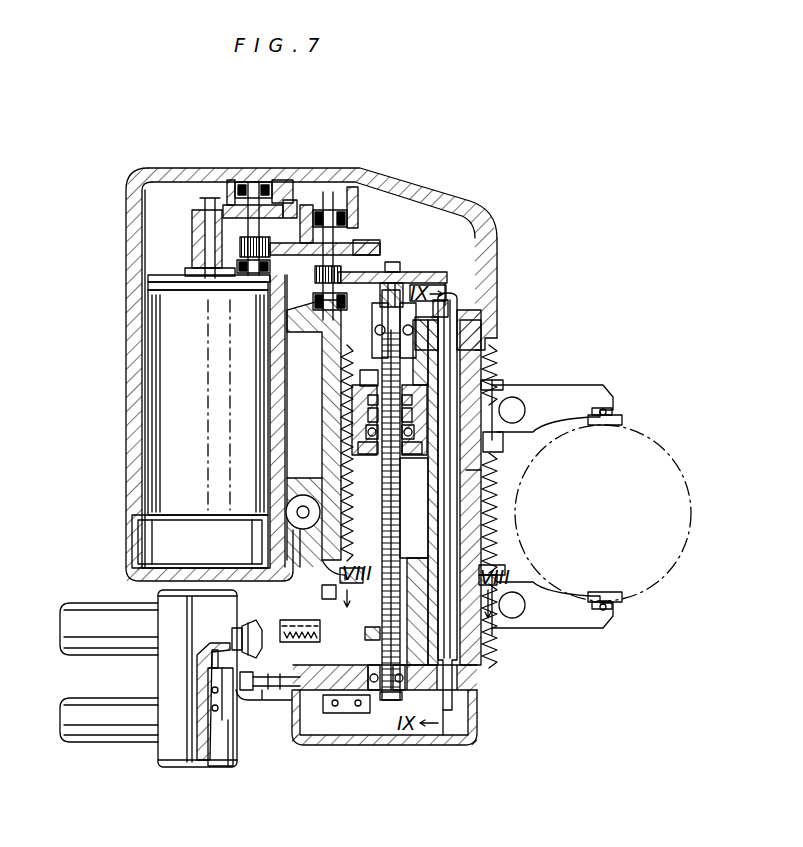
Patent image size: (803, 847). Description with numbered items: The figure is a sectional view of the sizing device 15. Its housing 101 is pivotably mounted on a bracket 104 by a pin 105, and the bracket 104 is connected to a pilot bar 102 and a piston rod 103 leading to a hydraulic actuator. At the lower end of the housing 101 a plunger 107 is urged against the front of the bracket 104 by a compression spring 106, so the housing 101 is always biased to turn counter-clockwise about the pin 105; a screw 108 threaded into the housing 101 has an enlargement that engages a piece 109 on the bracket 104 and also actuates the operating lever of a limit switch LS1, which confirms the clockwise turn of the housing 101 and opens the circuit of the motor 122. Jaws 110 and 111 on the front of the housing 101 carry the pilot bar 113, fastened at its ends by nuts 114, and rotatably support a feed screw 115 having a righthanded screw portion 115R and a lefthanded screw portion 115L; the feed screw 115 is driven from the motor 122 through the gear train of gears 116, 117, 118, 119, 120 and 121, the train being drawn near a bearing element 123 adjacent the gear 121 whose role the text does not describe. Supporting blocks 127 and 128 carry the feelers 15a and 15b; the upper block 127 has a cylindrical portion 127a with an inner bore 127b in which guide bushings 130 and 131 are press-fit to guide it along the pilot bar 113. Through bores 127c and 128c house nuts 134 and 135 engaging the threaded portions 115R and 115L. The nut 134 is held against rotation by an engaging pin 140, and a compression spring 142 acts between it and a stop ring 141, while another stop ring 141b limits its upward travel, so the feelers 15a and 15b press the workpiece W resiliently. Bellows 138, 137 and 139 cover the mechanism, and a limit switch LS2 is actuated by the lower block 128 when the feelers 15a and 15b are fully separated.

The sizing device 15 is at (448, 187).
The feeler 15a is at (620, 420).
The feeler 15b is at (617, 598).
The housing 101 is at (311, 374).
The pilot bar 102 is at (95, 610).
The piston rod 103 is at (103, 708).
The bracket 104 is at (197, 772).
The pin 105 is at (297, 514).
The compression spring 106 is at (282, 622).
The plunger 107 is at (240, 635).
The screw 108 is at (268, 700).
The piece 109 is at (250, 690).
The jaw 110 is at (489, 342).
The jaw 111 is at (478, 680).
The pilot bar 113 is at (470, 523).
The nut 114 is at (499, 290).
The feed screw 115 is at (378, 495).
The righthanded screw portion 115R is at (498, 358).
The lefthanded screw portion 115L is at (498, 658).
The gear 116 is at (446, 300).
The gear 117 is at (400, 275).
The gear 118 is at (372, 248).
The gear 119 is at (252, 240).
The gear 120 is at (322, 250).
The gear 121 is at (203, 215).
The motor 122 is at (198, 423).
The bearing 123 is at (194, 243).
The supporting block 127 is at (520, 384).
The cylindrical portion 127a is at (472, 488).
The inner bore 127b is at (472, 496).
The through bore 127c is at (370, 400).
The supporting block 128 is at (482, 572).
The through bore 128c is at (330, 602).
The guide bushing 130 is at (505, 442).
The guide bushing 131 is at (419, 492).
The nut 134 is at (356, 392).
The nut 135 is at (376, 638).
The bellows 137 is at (372, 520).
The bellows 138 is at (345, 340).
The bellows 139 is at (295, 642).
The engaging pin 140 is at (366, 434).
The stop ring 141 is at (358, 448).
The stop ring 141b is at (362, 376).
The compression spring 142 is at (370, 415).
The limit switch LS1 is at (233, 740).
The limit switch LS2 is at (366, 713).
The workpiece W is at (680, 488).